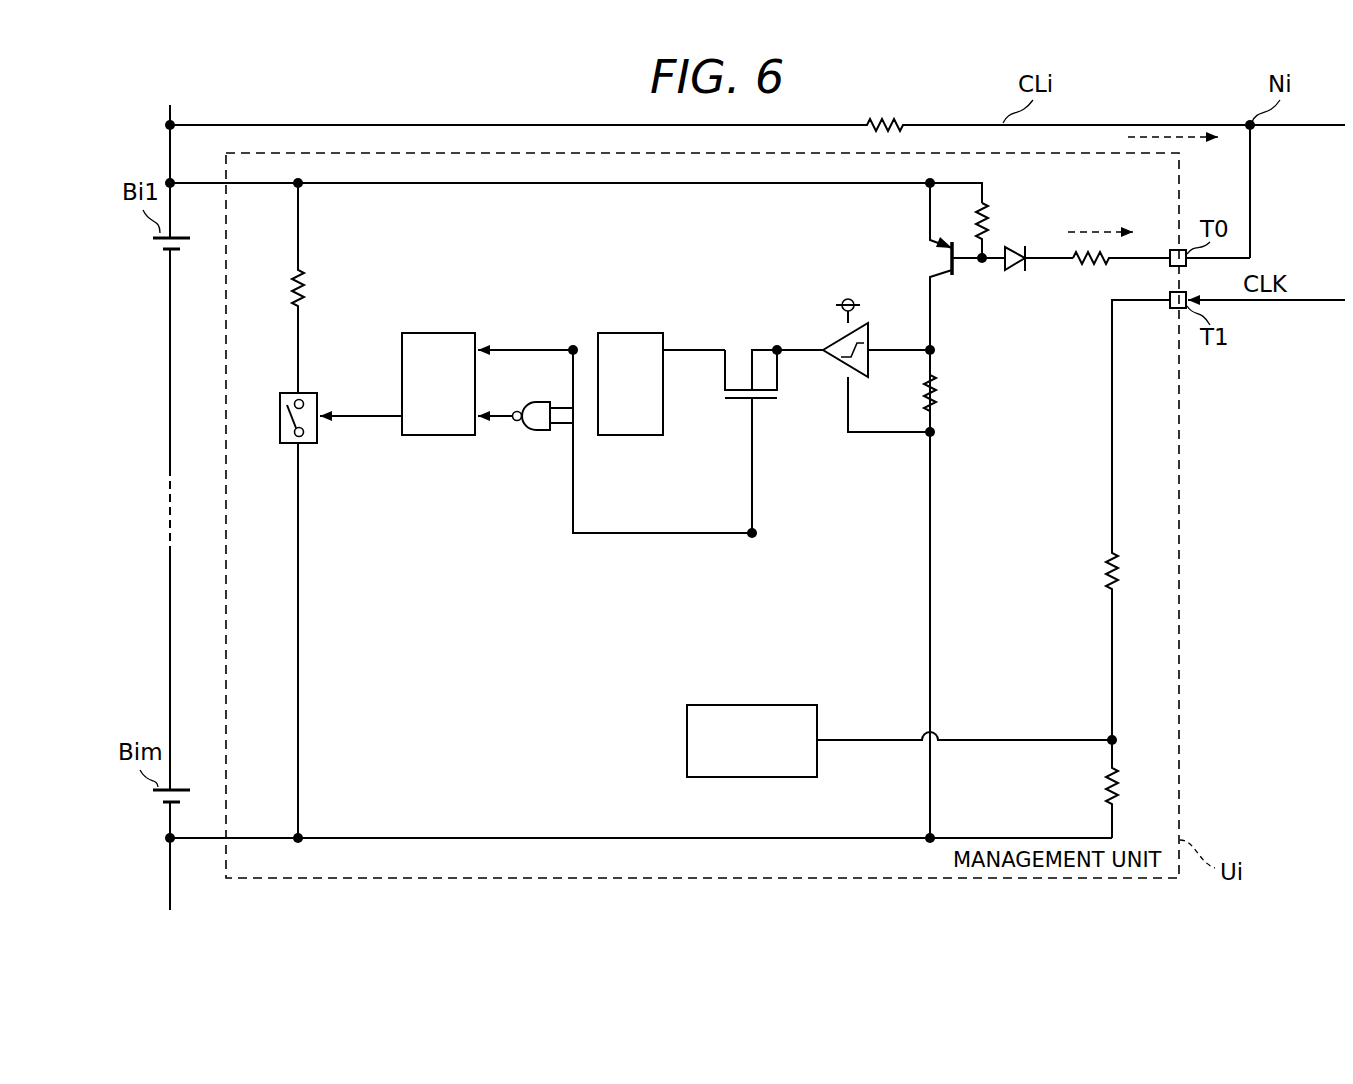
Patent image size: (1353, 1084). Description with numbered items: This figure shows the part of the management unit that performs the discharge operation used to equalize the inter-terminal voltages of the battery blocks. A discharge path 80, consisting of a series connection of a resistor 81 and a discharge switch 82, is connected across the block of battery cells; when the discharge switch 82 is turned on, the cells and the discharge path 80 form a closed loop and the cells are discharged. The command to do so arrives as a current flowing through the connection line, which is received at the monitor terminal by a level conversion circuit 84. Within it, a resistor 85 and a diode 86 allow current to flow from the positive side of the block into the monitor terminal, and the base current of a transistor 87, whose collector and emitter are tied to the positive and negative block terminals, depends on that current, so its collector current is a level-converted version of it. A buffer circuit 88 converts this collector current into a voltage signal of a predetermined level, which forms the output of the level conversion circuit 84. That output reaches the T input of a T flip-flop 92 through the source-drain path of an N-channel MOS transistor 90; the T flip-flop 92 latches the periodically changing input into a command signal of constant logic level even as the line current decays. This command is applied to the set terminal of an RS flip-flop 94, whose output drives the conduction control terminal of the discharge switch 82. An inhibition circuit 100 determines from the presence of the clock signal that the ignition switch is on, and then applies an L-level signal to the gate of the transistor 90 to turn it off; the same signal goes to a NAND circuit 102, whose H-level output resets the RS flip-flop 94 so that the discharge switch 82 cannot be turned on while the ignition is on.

The discharge path 80 is at (384, 308).
The resistor 81 is at (306, 282).
The discharge switch 82 is at (318, 400).
The level conversion circuit 84 is at (963, 302).
The resistor 85 is at (989, 210).
The diode 86 is at (1013, 273).
The transistor 87 is at (932, 243).
The buffer circuit 88 is at (830, 356).
The N-channel MOS transistor 90 is at (724, 391).
The T flip-flop 92 is at (645, 333).
The RS flip-flop 94 is at (456, 333).
The inhibition circuit 100 is at (798, 705).
The NAND circuit 102 is at (533, 431).